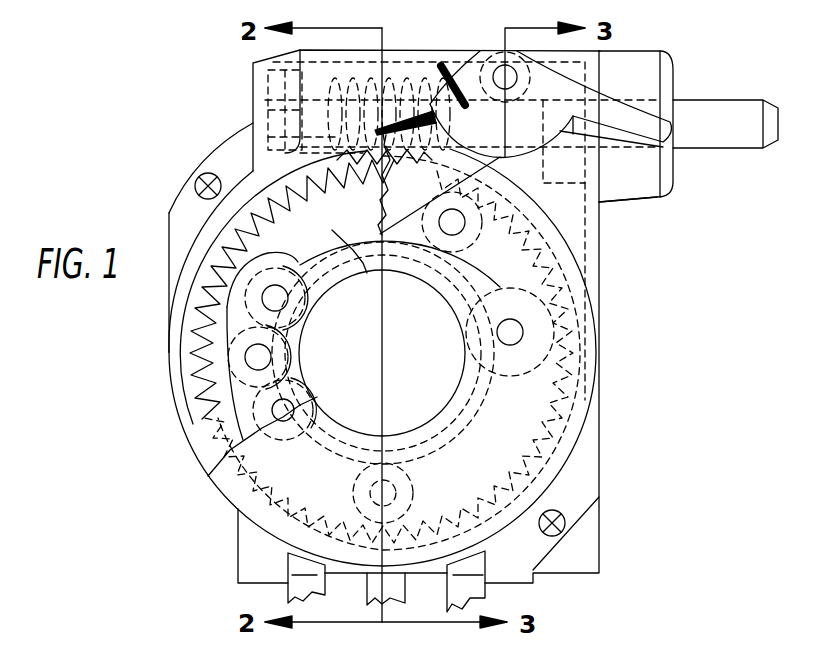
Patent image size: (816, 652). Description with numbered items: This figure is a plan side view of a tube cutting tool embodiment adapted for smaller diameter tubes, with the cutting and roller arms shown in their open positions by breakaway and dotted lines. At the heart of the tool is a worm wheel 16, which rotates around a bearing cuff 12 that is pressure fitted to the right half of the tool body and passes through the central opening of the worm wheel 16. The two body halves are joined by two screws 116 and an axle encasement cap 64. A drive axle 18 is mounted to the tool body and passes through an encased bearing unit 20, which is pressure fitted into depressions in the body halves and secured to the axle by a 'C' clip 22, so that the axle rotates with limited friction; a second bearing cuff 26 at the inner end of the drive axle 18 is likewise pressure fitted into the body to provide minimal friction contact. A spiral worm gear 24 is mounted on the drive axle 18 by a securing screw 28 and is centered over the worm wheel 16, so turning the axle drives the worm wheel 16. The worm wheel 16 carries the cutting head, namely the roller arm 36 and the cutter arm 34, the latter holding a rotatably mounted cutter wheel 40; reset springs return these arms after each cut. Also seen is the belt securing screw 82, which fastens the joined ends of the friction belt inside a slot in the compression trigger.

The bearing cuff 12 is at (313, 262).
The worm wheel 16 is at (382, 277).
The drive axle 18 is at (702, 143).
The encased bearing unit 20 is at (590, 171).
The 'C' clip 22 is at (537, 117).
The spiral worm gear 24 is at (357, 172).
The bearing cuff 26 is at (270, 102).
The securing screw 28 is at (317, 100).
The cutter arm 34 is at (577, 323).
The roller arm 36 is at (238, 302).
The cutter wheel 40 is at (508, 303).
The axle encasement cap 64 is at (633, 197).
The belt securing screw 82 is at (441, 66).
The screws 116 is at (203, 173).